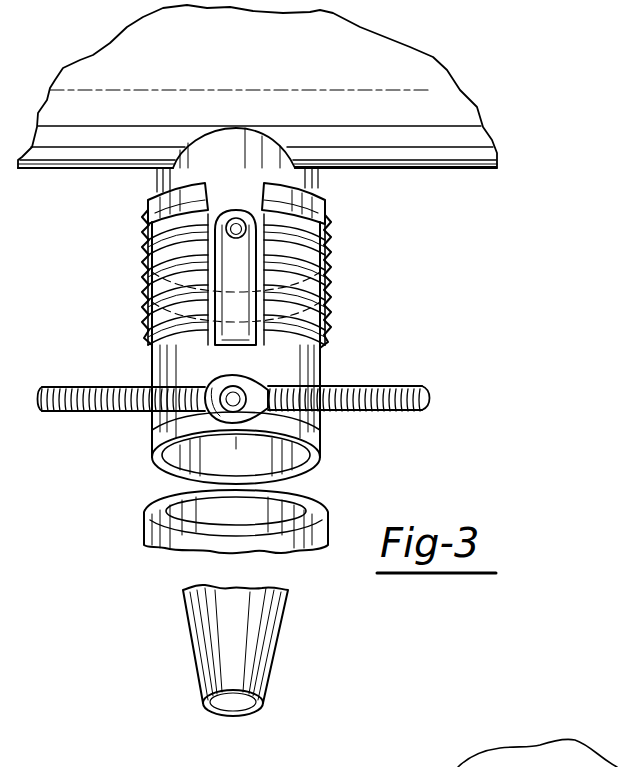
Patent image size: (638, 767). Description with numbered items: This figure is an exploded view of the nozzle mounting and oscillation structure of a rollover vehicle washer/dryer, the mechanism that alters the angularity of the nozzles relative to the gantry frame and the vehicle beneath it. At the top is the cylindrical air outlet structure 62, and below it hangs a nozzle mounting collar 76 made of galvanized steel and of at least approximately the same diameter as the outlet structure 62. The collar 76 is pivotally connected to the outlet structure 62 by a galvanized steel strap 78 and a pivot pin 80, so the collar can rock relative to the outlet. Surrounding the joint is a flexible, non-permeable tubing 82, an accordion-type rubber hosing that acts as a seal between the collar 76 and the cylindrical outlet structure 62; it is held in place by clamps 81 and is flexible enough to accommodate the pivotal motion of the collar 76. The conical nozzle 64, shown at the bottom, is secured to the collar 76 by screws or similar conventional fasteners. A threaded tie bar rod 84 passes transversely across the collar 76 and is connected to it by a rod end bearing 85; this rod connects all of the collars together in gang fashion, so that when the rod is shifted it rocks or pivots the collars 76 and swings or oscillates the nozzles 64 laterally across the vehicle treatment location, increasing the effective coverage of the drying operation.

The air outlet structure 62 is at (312, 171).
The conical nozzle 64 is at (210, 638).
The nozzle mounting collar 76 is at (322, 432).
The galvanized steel strap 78 is at (240, 284).
The pivot pin 80 is at (236, 215).
The clamp 81 is at (322, 210).
The flexible non-permeable tubing 82 is at (322, 333).
The threaded tie bar rod 84 is at (410, 386).
The rod end bearing 85 is at (156, 378).